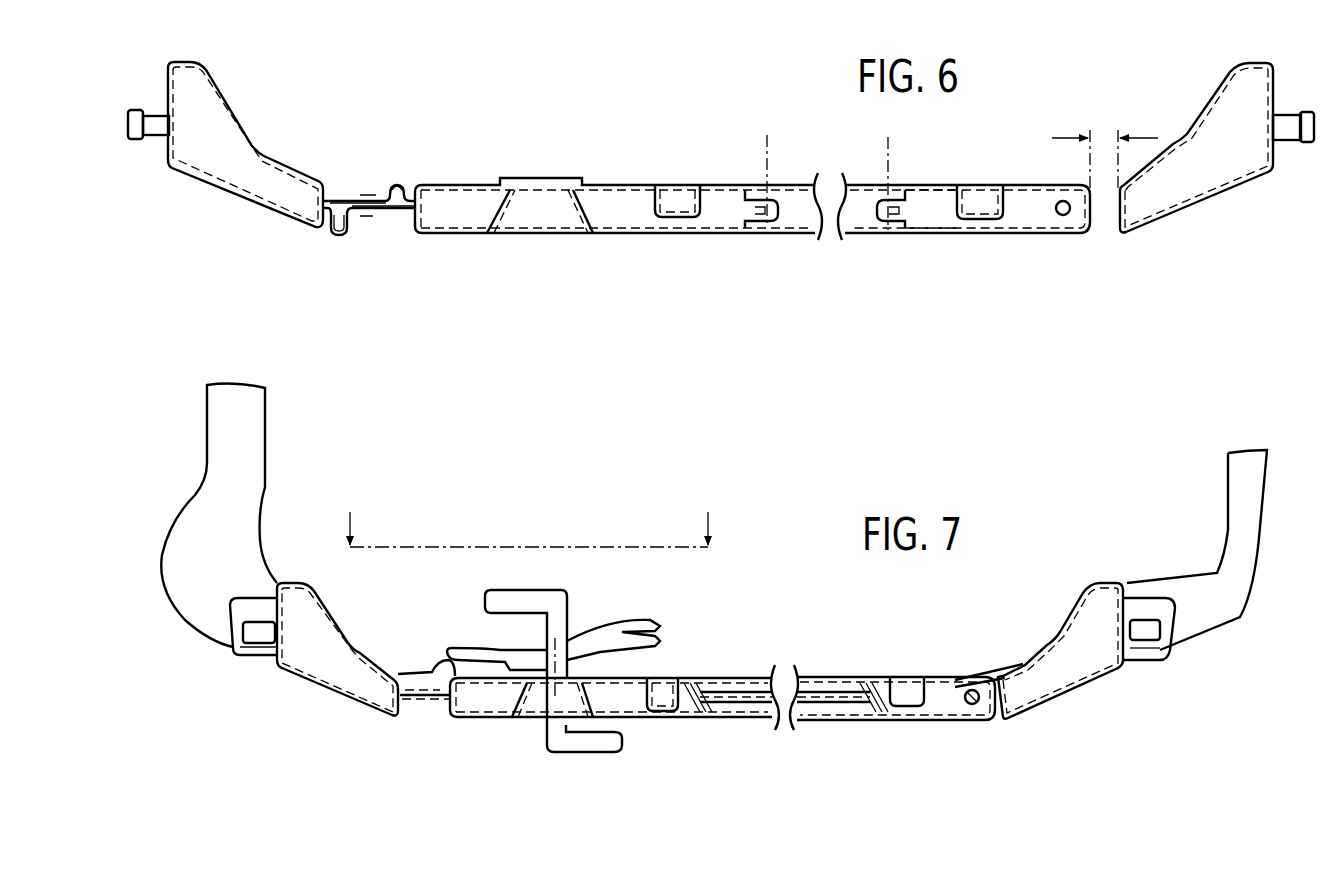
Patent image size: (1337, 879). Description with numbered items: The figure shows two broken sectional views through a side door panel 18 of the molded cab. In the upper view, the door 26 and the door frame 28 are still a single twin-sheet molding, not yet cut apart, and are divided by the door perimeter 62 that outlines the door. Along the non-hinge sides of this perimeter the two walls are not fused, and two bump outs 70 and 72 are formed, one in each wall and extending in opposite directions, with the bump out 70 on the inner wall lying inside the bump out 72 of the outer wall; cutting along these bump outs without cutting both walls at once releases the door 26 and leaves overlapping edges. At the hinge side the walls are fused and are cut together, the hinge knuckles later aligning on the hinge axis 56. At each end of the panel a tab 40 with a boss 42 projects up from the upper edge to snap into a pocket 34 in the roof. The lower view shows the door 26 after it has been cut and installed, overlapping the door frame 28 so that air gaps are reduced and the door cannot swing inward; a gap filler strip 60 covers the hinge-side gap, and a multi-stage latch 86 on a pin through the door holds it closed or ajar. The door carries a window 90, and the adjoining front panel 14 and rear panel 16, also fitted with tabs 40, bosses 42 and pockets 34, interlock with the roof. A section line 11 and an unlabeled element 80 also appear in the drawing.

In FIG. 7, the section line 11- 11 is at (528, 545).
In FIG. 7, the front panel 14 is at (1232, 572).
In FIG. 7, the rear panel 16 is at (220, 468).
In FIG. 6, the side door panel 18 is at (685, 168).
In FIG. 7, the side door panel 18 is at (892, 657).
In FIG. 6, the door 26 is at (935, 185).
In FIG. 7, the door 26 is at (700, 680).
In FIG. 6, the door frame 28 is at (1160, 222).
In FIG. 7, the pocket 34 is at (240, 652).
In FIG. 6, the tab 40 is at (158, 140).
In FIG. 7, the tab 40 is at (262, 633).
In FIG. 6, the boss 42 is at (140, 110).
In FIG. 6, the hinge axis 56 is at (1069, 215).
In FIG. 7, the gap filler strip 60 is at (1000, 675).
In FIG. 6, the door perimeter 62 is at (347, 196).
In FIG. 6, the bump out 70 is at (340, 236).
In FIG. 6, the bump out 72 is at (398, 183).
In FIG. 7, the strap 80 is at (415, 665).
In FIG. 7, the multi-stage latch 86 is at (597, 620).
In FIG. 7, the window 90 is at (810, 700).